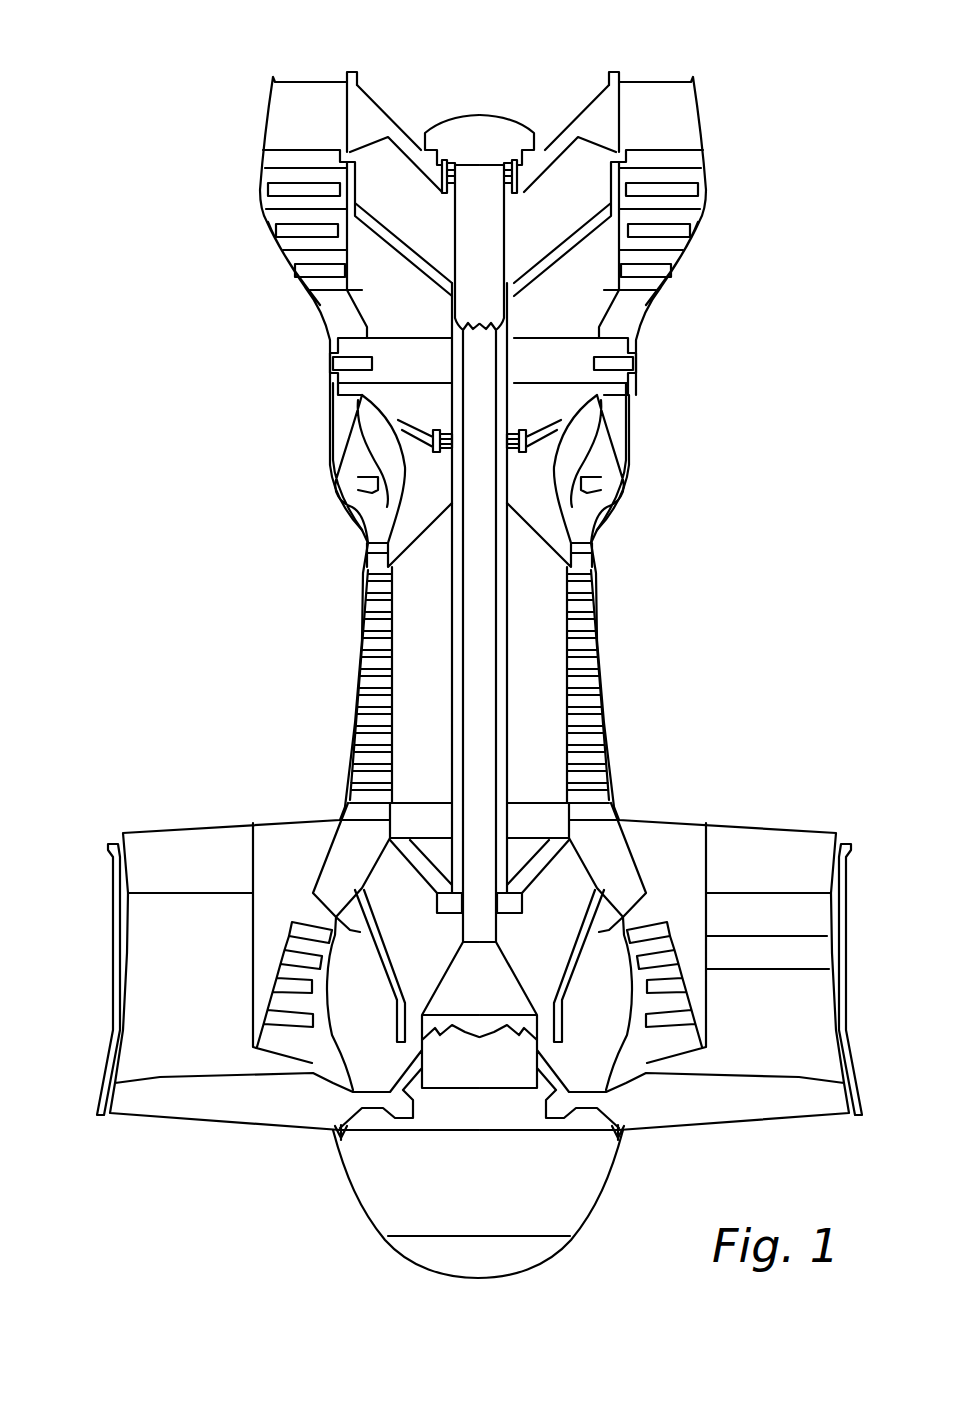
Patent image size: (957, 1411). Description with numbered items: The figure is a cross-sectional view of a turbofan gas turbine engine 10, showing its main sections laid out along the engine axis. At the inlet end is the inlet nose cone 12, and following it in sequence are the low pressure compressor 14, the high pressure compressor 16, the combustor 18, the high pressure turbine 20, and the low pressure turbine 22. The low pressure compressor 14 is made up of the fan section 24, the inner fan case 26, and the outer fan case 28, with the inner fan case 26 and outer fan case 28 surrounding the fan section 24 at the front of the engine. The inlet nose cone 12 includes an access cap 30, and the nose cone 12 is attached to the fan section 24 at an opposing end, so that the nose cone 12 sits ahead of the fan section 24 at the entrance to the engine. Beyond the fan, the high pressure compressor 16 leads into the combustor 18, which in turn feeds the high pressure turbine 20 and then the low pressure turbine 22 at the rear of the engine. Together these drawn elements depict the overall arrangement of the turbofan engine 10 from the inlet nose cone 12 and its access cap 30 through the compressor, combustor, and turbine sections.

The turbofan gas turbine engine 10 is at (168, 78).
The inlet nose cone 12 is at (375, 1177).
The low pressure compressor 14 is at (300, 893).
The high pressure compressor 16 is at (362, 680).
The combustor 18 is at (335, 476).
The high pressure turbine 20 is at (333, 365).
The low pressure turbine 22 is at (266, 209).
The fan section 24 is at (207, 1103).
The inner fan case 26 is at (252, 953).
The outer fan case 28 is at (118, 934).
The access cap 30 is at (427, 1252).